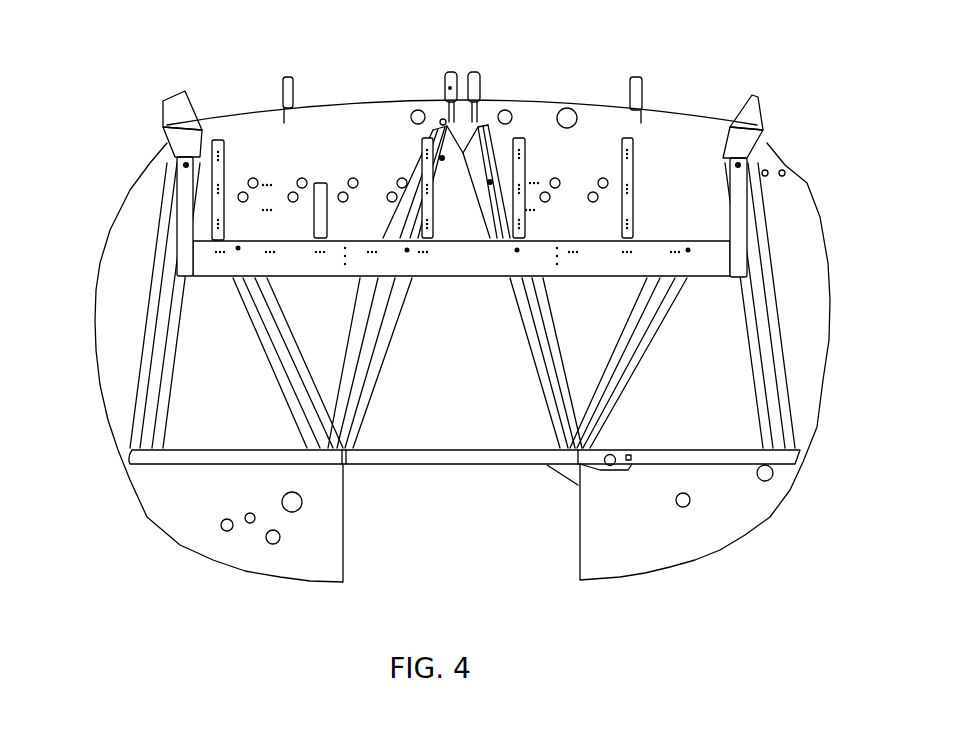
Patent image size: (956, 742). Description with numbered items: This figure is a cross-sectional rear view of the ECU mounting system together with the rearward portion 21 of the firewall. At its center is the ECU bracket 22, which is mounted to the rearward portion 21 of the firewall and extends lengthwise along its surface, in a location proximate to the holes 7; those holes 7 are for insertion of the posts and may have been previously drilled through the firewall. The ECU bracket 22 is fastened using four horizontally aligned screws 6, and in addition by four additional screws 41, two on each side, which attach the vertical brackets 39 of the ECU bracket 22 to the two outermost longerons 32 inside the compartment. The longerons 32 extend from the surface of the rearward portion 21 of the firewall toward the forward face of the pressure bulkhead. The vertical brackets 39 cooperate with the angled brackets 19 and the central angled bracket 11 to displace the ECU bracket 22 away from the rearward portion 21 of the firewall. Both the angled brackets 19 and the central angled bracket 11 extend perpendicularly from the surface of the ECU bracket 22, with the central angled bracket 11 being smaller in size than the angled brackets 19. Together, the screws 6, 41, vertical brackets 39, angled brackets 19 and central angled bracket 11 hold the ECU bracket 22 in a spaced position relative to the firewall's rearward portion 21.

The horizontally aligned screws 6 is at (238, 250).
The holes 7 is at (253, 180).
The central angled bracket 11 is at (329, 180).
The angled brackets 19 is at (216, 140).
The rearward portion 21 is at (450, 428).
The ECU bracket 22 is at (588, 268).
The longerons 32 is at (160, 110).
The vertical brackets 39 is at (182, 220).
The additional screws 41 is at (180, 123).